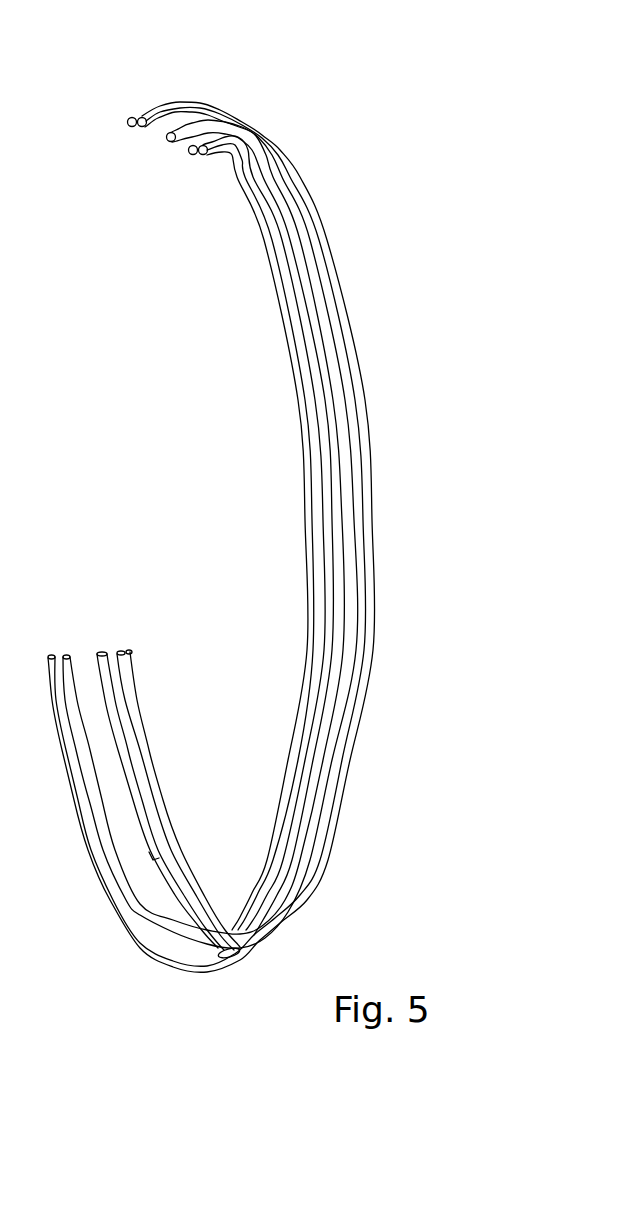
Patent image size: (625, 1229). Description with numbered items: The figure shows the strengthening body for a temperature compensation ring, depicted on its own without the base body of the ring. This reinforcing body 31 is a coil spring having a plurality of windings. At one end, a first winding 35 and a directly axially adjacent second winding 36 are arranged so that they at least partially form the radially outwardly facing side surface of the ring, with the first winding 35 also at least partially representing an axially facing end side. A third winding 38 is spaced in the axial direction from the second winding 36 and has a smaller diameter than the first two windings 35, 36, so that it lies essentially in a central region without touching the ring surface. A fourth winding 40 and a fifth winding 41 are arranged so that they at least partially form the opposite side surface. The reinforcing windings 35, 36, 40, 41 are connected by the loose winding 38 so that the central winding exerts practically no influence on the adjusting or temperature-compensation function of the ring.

The reinforcing body 31 is at (266, 496).
The first winding 35 is at (136, 113).
The second winding 36 is at (148, 113).
The third winding 38 is at (188, 125).
The fourth winding 40 is at (191, 158).
The fifth winding 41 is at (207, 158).